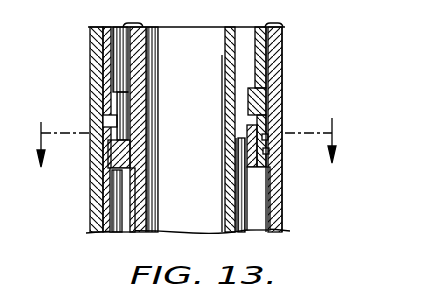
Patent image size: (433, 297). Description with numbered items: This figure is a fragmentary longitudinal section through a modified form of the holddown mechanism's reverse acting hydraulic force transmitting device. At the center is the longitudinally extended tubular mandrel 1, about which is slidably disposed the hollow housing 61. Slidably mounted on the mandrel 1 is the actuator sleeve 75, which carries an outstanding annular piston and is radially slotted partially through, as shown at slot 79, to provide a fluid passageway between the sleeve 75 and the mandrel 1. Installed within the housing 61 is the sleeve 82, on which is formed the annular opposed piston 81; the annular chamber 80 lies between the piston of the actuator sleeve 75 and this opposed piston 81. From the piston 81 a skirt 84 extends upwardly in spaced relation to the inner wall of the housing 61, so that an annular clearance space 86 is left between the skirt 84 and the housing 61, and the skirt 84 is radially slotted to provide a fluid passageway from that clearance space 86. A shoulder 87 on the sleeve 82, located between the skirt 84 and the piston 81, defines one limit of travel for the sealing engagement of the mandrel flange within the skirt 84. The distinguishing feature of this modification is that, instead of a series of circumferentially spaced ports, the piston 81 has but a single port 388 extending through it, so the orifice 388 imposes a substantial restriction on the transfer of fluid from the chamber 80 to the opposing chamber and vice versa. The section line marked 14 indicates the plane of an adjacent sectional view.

The mandrel 1 is at (236, 218).
The section line 14- 14 is at (188, 132).
The housing 61 is at (283, 62).
The actuator sleeve 75 is at (96, 222).
The partial radial slot 79 is at (246, 190).
The annular chamber 80 is at (256, 218).
The annular opposed piston 81 is at (268, 156).
The sleeve 82 is at (240, 100).
The skirt 84 is at (262, 43).
The annular clearance space 86 is at (283, 38).
The shoulder 87 is at (250, 90).
The single port 388 is at (263, 162).